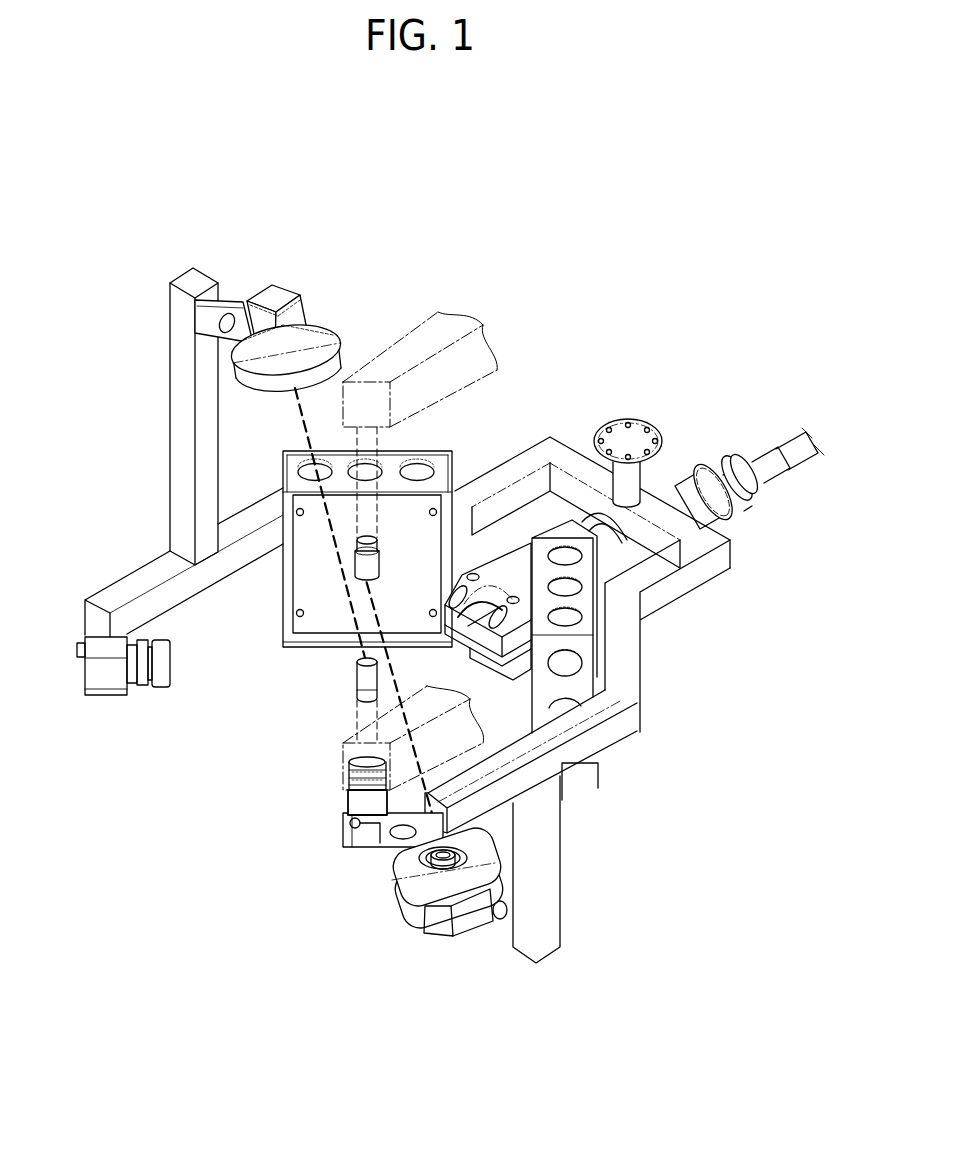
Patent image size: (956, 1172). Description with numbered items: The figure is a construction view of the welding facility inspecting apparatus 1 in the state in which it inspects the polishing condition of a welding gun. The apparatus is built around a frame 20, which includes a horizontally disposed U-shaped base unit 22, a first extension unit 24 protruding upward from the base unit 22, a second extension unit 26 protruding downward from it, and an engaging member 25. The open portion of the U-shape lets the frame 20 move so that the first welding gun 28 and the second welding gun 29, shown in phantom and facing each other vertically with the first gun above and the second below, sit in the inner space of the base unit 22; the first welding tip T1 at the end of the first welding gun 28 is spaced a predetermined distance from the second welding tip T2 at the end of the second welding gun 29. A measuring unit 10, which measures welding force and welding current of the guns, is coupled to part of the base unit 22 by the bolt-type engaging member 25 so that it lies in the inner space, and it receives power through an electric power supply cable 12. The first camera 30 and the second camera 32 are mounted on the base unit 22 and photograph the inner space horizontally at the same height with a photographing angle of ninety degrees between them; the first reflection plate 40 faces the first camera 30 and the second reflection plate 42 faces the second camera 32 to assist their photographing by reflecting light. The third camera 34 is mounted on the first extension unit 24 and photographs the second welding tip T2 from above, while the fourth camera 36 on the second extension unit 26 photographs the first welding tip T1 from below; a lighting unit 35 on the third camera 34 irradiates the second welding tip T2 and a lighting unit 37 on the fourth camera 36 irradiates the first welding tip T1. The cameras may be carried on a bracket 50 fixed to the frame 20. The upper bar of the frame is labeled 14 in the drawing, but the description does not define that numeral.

The welding facility inspecting apparatus 1 is at (713, 341).
The measuring unit 10 is at (512, 563).
The electric power supply cable 12 is at (699, 498).
The upper frame bar 14 is at (648, 560).
The frame 20 is at (530, 437).
The base unit 22 is at (590, 714).
The first extension unit 24 is at (187, 388).
The engaging member 25 is at (631, 437).
The second extension unit 26 is at (552, 888).
The first welding gun 28 is at (402, 345).
The second welding gun 29 is at (343, 744).
The first camera 30 is at (107, 678).
The second camera 32 is at (357, 802).
The third camera 34 is at (294, 318).
The lighting unit 35 is at (330, 355).
The fourth camera 36 is at (443, 920).
The lighting unit 37 is at (407, 882).
The first reflection plate 40 is at (584, 652).
The second reflection plate 42 is at (293, 462).
The bracket 50 is at (212, 318).
The first welding tip T1 is at (353, 565).
The second welding tip T2 is at (355, 683).